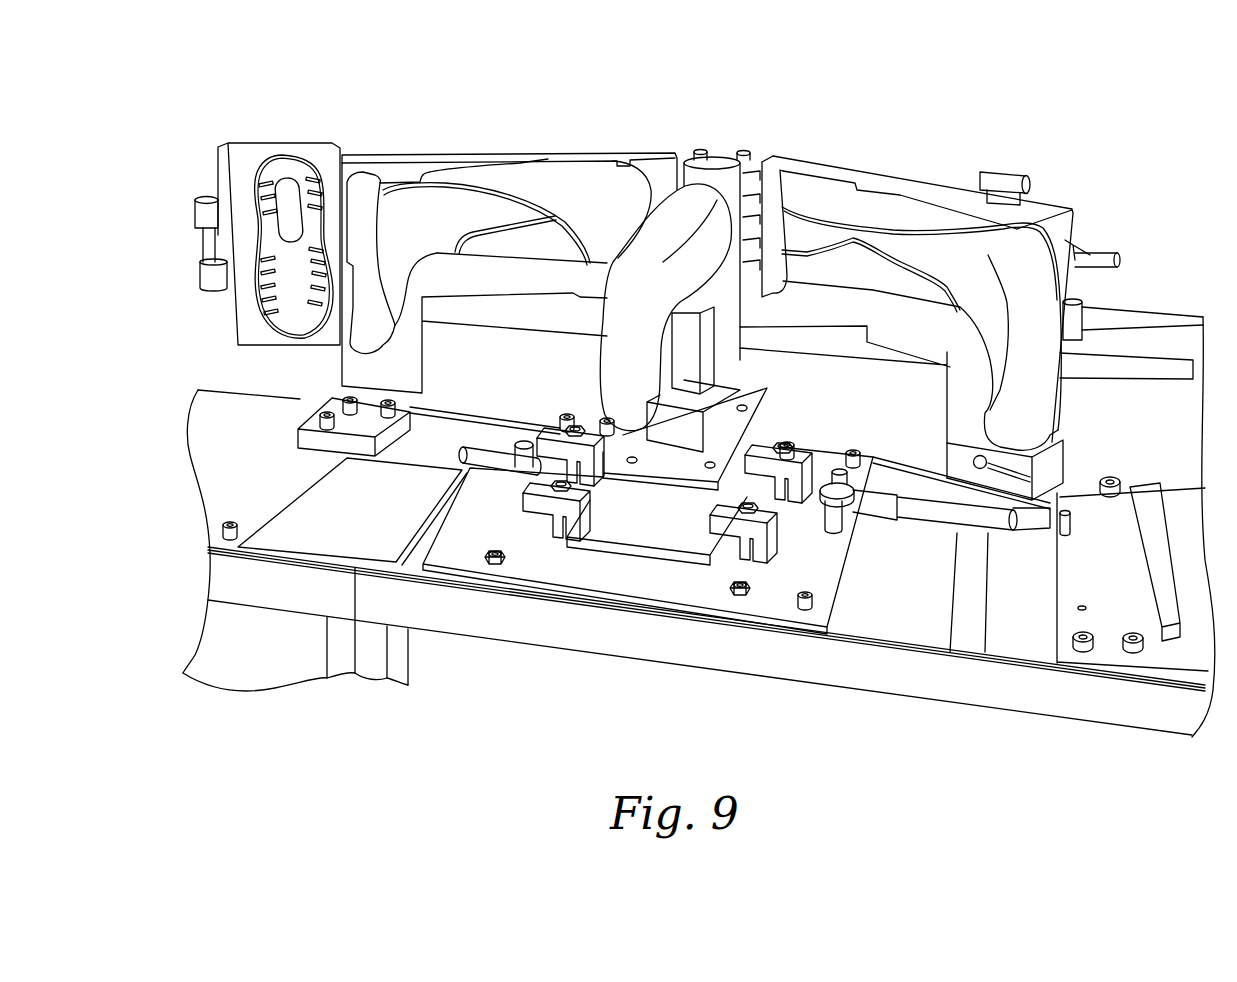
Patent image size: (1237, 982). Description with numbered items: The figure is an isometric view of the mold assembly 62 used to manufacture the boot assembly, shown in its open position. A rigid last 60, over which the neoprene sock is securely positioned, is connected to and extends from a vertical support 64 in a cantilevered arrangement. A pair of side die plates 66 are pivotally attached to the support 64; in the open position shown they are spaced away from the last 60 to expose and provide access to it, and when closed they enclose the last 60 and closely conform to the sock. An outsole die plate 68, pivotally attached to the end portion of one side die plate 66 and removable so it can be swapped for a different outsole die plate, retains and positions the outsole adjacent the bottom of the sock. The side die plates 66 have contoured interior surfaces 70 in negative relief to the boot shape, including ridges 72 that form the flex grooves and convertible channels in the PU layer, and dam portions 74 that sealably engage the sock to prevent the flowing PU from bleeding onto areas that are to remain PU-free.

The last 60 is at (683, 207).
The mold assembly 62 is at (823, 113).
The vertical support 64 is at (718, 163).
The side die plates 66 is at (433, 167).
The outsole die plate 68 is at (287, 150).
The contoured interior surfaces 70 is at (493, 182).
The ridges 72 is at (993, 333).
The dam portions 74 is at (537, 217).